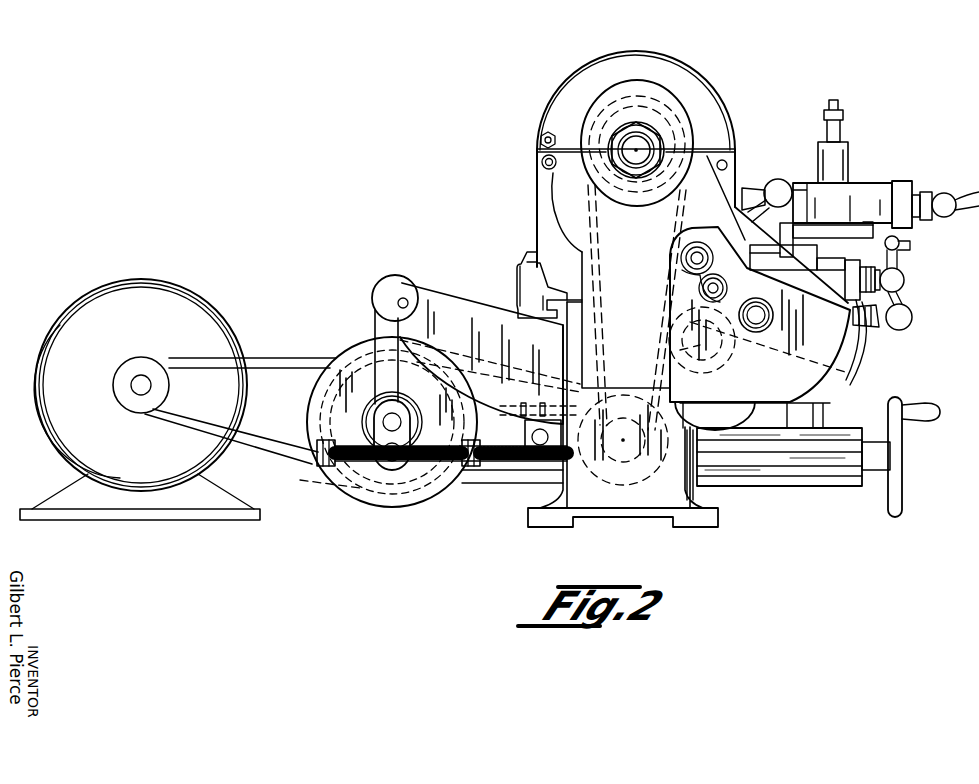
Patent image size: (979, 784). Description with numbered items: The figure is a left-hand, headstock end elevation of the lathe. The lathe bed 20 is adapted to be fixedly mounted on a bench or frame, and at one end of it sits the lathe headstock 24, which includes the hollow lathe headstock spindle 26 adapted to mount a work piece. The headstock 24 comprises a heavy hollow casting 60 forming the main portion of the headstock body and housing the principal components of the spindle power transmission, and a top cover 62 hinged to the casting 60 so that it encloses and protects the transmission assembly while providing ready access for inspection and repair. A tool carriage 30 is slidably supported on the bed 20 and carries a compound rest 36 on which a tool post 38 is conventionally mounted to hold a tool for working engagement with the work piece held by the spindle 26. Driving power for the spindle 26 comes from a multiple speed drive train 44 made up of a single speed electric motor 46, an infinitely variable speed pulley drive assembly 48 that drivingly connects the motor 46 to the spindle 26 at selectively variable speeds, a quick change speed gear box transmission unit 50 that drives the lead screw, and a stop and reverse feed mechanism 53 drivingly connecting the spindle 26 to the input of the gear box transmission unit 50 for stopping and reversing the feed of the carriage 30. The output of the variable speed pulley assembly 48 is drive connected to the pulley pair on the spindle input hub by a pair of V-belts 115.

The lathe bed 20 is at (722, 512).
The lathe headstock 24 is at (682, 52).
The lathe headstock spindle 26 is at (636, 166).
The tool carriage 30 is at (855, 176).
The compound rest 36 is at (890, 198).
The tool post 38 is at (846, 135).
The multiple speed drive train 44 is at (327, 491).
The single speed electric motor 46 is at (178, 298).
The infinitely variable speed pulley drive assembly 48 is at (343, 356).
The quick change speed gear box transmission unit 50 is at (829, 380).
The stop and reverse feed mechanism 53 is at (782, 180).
The hollow casting 60 is at (737, 165).
The top cover 62 is at (714, 85).
The V-belts 115 is at (598, 330).